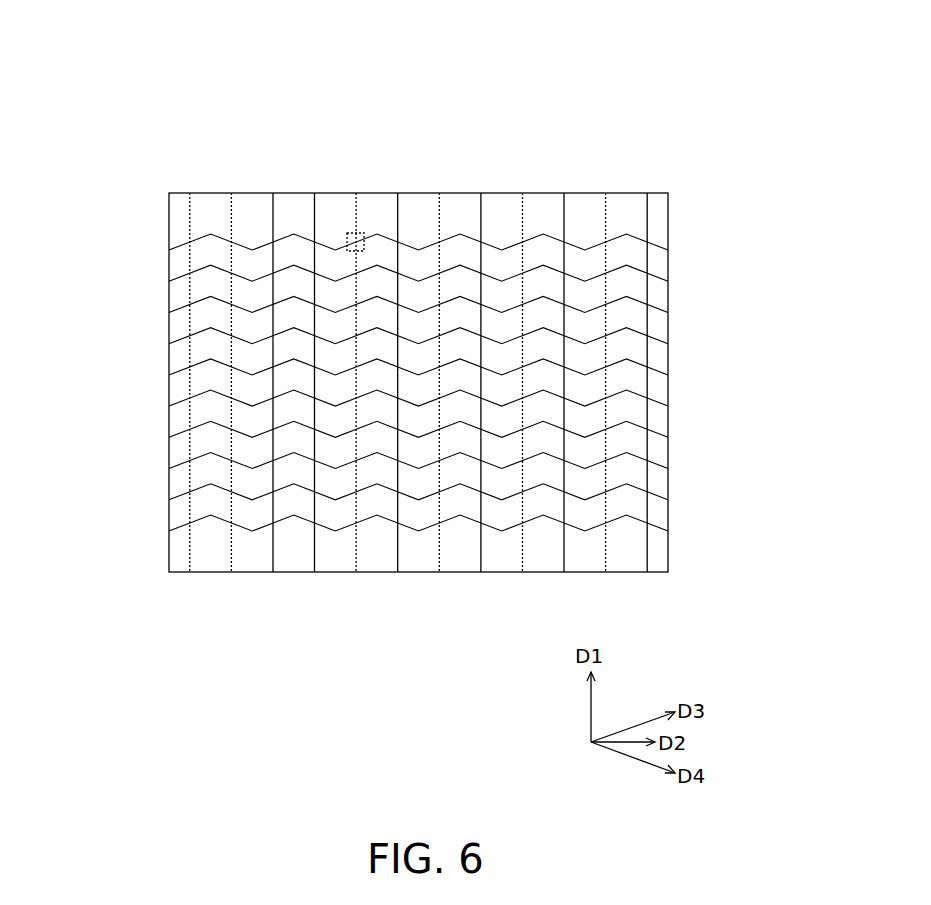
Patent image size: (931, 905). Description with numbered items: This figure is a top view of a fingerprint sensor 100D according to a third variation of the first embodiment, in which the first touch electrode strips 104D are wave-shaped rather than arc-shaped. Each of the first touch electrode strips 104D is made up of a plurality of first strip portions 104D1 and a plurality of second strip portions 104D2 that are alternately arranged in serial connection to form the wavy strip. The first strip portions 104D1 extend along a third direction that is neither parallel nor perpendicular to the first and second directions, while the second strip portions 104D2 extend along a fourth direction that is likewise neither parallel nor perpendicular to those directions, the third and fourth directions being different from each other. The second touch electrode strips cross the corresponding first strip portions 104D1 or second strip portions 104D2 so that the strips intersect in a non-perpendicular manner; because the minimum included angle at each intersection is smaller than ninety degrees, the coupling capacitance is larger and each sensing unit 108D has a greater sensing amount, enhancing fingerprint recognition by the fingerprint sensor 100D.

The fingerprint sensor 100D is at (657, 72).
The first touch electrode strips 104D is at (262, 134).
The first strip portions 104D1 is at (181, 242).
The second strip portions 104D2 is at (224, 242).
The sensing unit 108D is at (363, 232).